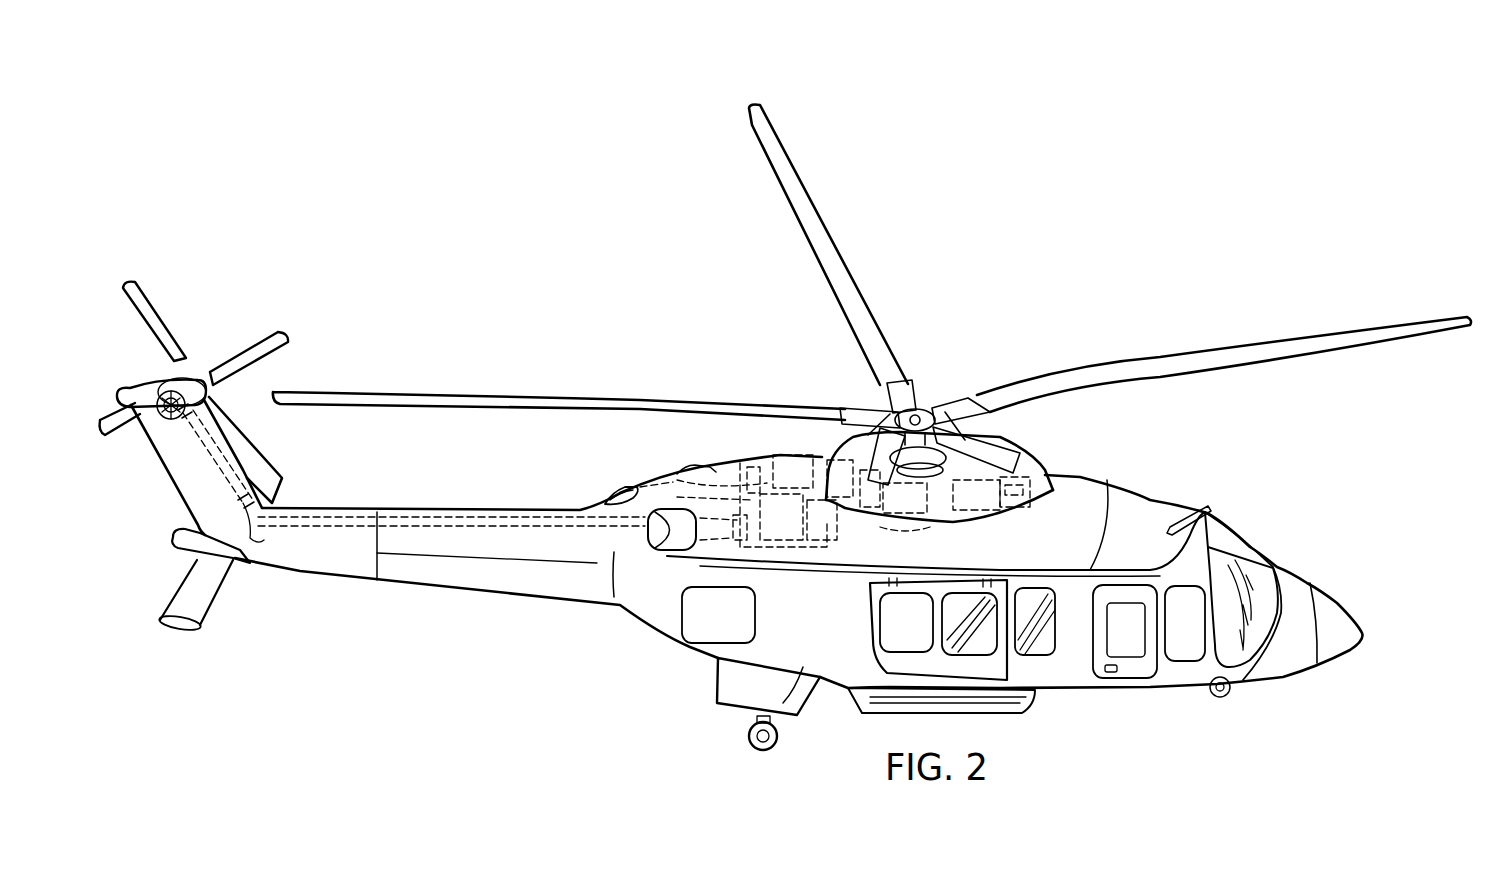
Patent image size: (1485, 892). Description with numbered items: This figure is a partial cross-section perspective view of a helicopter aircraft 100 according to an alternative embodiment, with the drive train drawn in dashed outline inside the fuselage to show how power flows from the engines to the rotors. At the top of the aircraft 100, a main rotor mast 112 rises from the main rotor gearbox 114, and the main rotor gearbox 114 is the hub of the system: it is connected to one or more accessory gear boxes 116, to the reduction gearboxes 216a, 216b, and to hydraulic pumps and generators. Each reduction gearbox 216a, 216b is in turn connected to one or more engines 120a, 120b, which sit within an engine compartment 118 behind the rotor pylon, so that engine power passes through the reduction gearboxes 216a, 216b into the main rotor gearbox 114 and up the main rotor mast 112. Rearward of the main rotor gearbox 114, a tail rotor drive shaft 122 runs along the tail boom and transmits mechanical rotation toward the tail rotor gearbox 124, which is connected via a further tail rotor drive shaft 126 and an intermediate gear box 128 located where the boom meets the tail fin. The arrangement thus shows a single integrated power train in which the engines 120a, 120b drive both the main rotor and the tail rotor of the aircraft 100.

The aircraft 100 is at (785, 421).
The main rotor mast 112 is at (890, 512).
The main rotor gearbox 114 is at (925, 515).
The accessory gear box 116 is at (1005, 509).
The engine compartment 118 is at (861, 481).
The engine 120a is at (763, 540).
The engine 120b is at (775, 457).
The tail rotor drive shaft 122 is at (467, 517).
The tail rotor gearbox 124 is at (158, 380).
The tail rotor drive shaft 126 is at (232, 457).
The intermediate gear box 128 is at (253, 540).
The reduction gearbox 216a is at (822, 542).
The reduction gearbox 216b is at (835, 447).